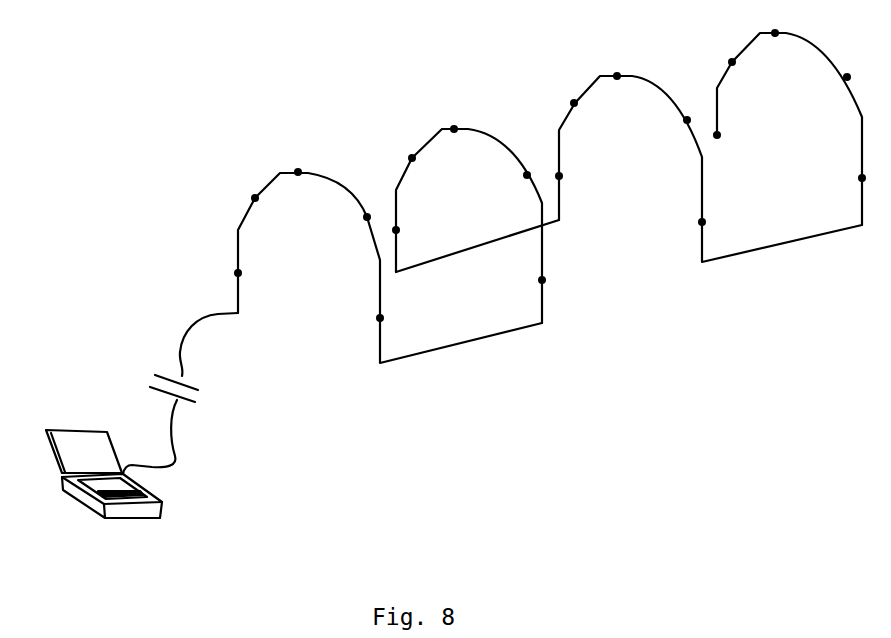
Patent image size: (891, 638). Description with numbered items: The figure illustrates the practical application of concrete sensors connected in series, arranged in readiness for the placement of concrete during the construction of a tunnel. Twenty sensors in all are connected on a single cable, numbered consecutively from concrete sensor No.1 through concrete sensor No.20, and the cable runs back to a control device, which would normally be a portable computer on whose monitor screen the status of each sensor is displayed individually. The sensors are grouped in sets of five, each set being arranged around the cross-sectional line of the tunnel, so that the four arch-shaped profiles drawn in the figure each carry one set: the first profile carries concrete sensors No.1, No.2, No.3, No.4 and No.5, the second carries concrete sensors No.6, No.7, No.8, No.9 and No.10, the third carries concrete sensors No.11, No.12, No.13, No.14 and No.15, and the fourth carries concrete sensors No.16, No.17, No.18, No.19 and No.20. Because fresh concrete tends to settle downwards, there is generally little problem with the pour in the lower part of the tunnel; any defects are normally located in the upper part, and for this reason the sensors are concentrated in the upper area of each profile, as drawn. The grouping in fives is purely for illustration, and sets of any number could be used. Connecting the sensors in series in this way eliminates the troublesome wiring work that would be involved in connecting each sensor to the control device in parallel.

The concrete sensor No. 1 is at (266, 275).
The concrete sensor No. 2 is at (226, 197).
The concrete sensor No. 3 is at (302, 188).
The concrete sensor No. 4 is at (338, 223).
The concrete sensor No. 5 is at (352, 320).
The concrete sensor No. 6 is at (512, 281).
The concrete sensor No. 7 is at (494, 180).
The concrete sensor No. 8 is at (457, 147).
The concrete sensor No. 9 is at (378, 158).
The concrete sensor No. 10 is at (432, 228).
The concrete sensor No. 11 is at (596, 183).
The concrete sensor No. 12 is at (535, 106).
The concrete sensor No. 13 is at (619, 96).
The concrete sensor No. 14 is at (649, 132).
The concrete sensor No. 15 is at (665, 230).
The concrete sensor No. 16 is at (824, 187).
The concrete sensor No. 17 is at (810, 91).
The concrete sensor No. 18 is at (779, 53).
The concrete sensor No. 19 is at (697, 63).
The concrete sensor No. 20 is at (752, 141).